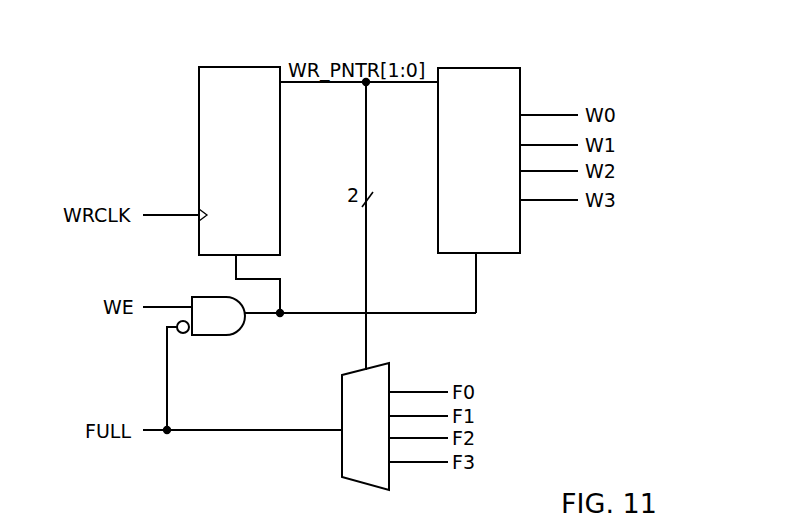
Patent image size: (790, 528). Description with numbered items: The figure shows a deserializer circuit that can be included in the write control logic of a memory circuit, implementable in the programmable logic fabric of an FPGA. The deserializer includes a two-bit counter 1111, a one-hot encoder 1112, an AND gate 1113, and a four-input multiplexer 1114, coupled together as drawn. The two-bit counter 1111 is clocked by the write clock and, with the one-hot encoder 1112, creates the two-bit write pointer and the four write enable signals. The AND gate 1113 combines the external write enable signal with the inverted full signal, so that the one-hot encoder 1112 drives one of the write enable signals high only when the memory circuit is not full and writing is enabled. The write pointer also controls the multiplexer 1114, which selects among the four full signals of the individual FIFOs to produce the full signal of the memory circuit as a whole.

The 2-bit counter 1111 is at (219, 181).
The one-hot encoder 1112 is at (461, 181).
The AND gate 1113 is at (207, 337).
The 4-input multiplexer 1114 is at (365, 485).